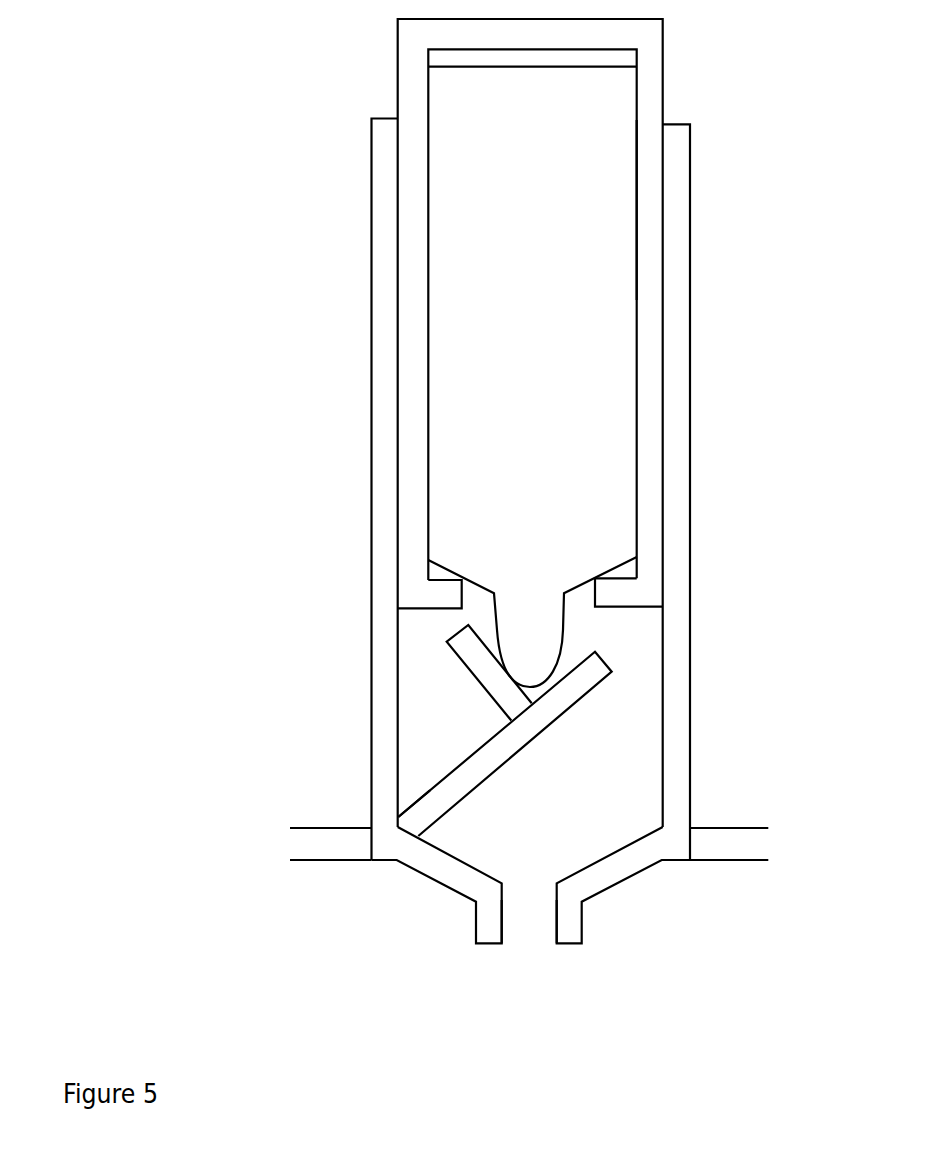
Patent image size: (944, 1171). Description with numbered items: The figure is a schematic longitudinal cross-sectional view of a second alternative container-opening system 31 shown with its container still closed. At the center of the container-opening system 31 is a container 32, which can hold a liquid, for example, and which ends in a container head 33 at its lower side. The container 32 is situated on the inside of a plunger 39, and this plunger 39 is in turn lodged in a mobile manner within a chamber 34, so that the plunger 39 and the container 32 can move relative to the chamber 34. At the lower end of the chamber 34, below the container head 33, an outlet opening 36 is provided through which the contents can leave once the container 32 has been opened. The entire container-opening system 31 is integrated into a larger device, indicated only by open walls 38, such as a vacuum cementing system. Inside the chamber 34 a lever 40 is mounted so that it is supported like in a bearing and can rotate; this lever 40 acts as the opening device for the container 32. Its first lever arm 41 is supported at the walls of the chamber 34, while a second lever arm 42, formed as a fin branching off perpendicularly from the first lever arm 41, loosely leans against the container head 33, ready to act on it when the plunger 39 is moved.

The container-opening system 31 is at (737, 59).
The container 32 is at (615, 282).
The container head 33 is at (518, 630).
The chamber 34 is at (378, 238).
The outlet opening 36 is at (518, 926).
The open walls 38 is at (338, 840).
The plunger 39 is at (656, 207).
The lever 40 is at (519, 719).
The first lever arm 41 is at (411, 808).
The second lever arm 42 is at (472, 654).